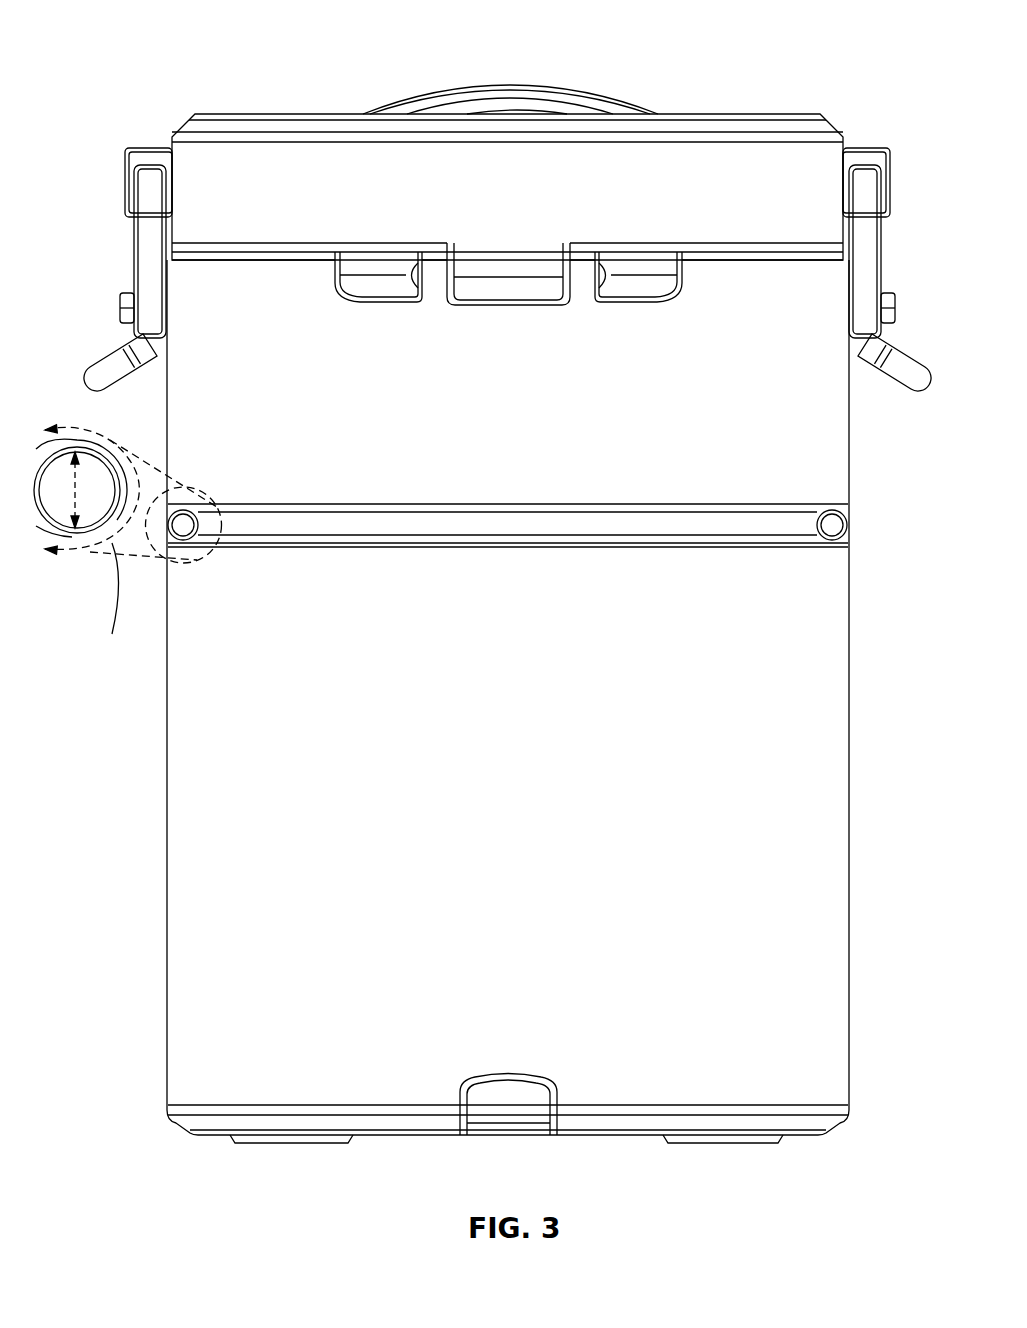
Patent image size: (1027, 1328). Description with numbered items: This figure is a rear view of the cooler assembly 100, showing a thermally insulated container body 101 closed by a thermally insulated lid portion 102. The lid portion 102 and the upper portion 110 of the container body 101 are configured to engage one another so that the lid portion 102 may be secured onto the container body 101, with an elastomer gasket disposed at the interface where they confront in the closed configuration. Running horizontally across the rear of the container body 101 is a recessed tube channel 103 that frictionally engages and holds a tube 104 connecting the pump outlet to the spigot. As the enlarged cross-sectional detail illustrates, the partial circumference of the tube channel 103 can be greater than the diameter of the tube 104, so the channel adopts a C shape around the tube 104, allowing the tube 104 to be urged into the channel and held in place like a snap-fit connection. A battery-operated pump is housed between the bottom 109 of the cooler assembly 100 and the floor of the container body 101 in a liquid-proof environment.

The cooler assembly 100 is at (152, 52).
The container body 101 is at (850, 683).
The lid portion 102 is at (783, 193).
The recessed tube channel 103 is at (72, 536).
The tube 104 is at (37, 488).
The bottom 109 is at (174, 1128).
The upper portion 110 is at (213, 248).